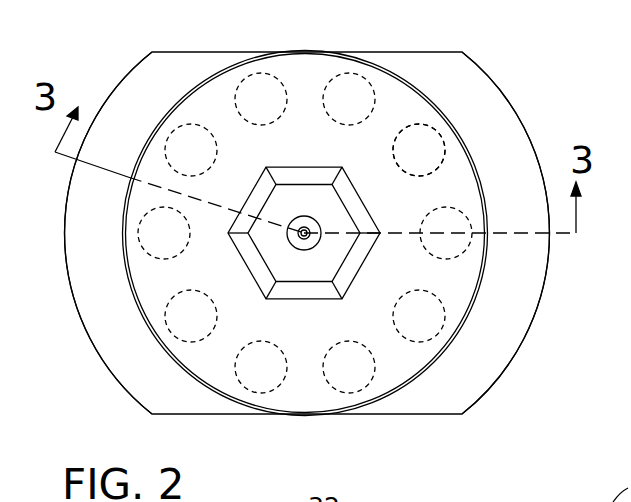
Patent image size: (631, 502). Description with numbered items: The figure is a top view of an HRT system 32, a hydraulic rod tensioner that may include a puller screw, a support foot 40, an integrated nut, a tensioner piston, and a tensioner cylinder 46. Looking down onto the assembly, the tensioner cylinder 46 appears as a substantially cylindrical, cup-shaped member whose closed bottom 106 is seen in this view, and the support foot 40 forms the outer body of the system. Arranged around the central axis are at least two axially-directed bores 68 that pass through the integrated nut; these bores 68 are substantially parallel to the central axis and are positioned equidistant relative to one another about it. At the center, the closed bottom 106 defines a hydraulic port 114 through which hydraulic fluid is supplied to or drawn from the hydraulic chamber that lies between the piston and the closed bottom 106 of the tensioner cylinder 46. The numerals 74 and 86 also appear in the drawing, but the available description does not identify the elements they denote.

The HRT system 32 is at (84, 77).
The support foot 40 is at (113, 332).
The tensioner cylinder 46 is at (307, 393).
The axially-directed bores 68 is at (433, 143).
The hole chamfer 74 is at (427, 158).
The closed bottom 106 is at (448, 273).
The hydraulic port 114 is at (305, 216).
The component of adjacent figure 86 is at (499, 486).